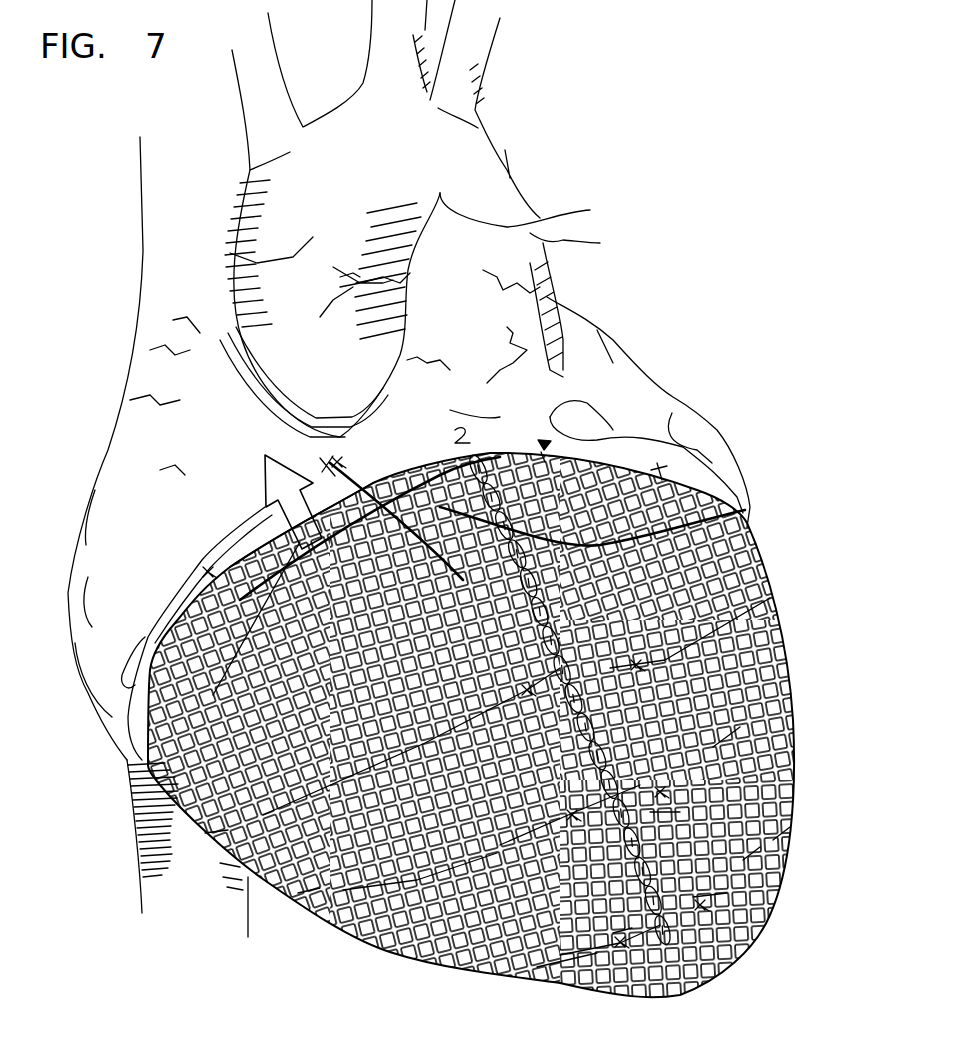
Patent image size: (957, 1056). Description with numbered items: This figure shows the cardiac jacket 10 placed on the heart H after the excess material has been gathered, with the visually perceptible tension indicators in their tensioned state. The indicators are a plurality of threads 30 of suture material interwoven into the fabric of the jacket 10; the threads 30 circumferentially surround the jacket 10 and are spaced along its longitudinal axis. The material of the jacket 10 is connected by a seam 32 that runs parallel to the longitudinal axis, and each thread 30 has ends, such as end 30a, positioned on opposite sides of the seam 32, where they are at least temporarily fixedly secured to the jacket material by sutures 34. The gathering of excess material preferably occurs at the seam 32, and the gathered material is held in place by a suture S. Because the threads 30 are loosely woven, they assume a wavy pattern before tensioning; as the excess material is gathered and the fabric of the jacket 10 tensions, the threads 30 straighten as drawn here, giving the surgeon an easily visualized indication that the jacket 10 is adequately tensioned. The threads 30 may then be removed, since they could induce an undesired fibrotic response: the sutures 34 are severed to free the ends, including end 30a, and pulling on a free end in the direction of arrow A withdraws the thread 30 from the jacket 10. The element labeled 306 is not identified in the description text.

The jacket 10 is at (383, 968).
The threads 30 is at (203, 832).
The end of thread 30a is at (288, 625).
The seam 32 is at (556, 588).
The sutures 34 is at (337, 463).
The anchor tie 306 is at (327, 455).
The heart H is at (723, 415).
The arrow A is at (262, 468).
The suture S is at (657, 463).